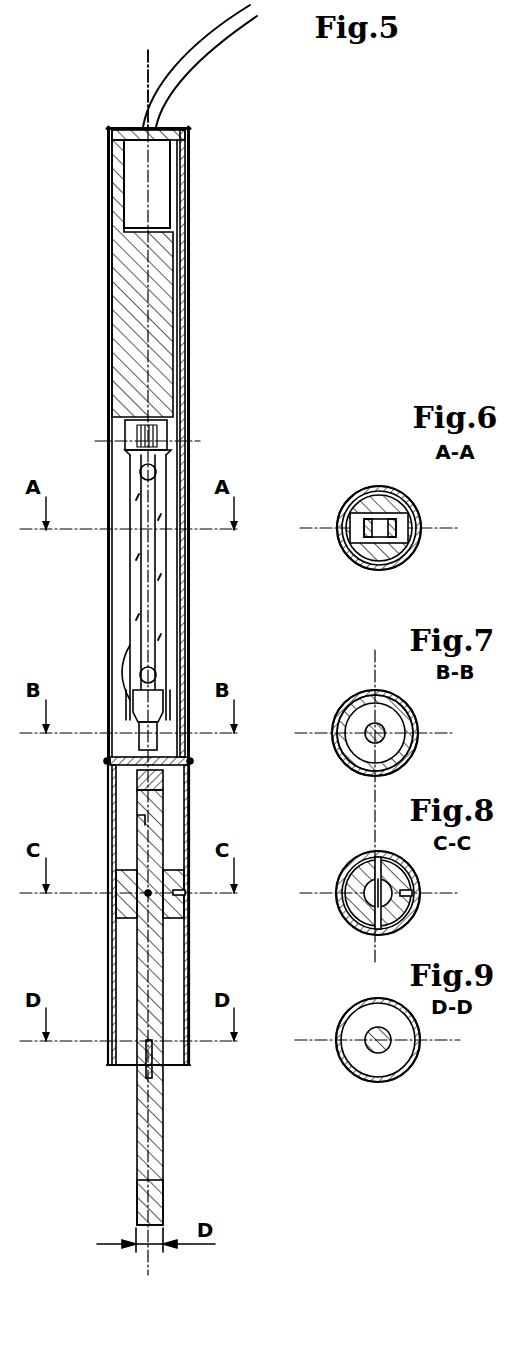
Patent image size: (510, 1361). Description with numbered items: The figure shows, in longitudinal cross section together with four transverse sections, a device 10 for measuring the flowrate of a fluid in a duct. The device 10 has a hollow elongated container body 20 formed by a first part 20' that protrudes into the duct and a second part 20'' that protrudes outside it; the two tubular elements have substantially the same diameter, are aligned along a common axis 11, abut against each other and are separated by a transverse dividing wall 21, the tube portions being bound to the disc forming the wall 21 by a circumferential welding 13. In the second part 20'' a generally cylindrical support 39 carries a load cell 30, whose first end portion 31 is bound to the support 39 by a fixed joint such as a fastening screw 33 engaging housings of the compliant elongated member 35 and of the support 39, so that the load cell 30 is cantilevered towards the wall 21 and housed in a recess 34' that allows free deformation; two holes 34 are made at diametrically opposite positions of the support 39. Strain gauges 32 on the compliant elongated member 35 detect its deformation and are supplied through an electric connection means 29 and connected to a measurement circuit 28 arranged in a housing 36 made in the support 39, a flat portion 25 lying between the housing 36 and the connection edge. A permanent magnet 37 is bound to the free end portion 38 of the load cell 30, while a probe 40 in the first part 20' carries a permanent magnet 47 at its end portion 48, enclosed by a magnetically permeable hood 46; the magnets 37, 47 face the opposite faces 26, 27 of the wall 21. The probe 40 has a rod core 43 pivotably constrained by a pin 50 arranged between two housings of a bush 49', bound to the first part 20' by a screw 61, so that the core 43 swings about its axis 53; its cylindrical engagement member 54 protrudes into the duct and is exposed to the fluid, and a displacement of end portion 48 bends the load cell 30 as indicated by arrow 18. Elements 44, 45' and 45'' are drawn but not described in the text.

In FIG. 5, the device 10 is at (272, 192).
In FIG. 5, the common axis 11 is at (148, 67).
In FIG. 5, the circumferential welding 13 is at (195, 762).
In FIG. 5, the arrow 18 is at (140, 735).
In FIG. 5, the hollow elongated container body 20 is at (236, 301).
In FIG. 5, the first part of hollow elongated container body 20' is at (183, 927).
In FIG. 8, the first part of hollow elongated container body 20' is at (363, 905).
In FIG. 9, the first part of hollow elongated container body 20' is at (363, 1057).
In FIG. 5, the second part of hollow elongated container body 20'' is at (117, 442).
In FIG. 6, the second part of hollow elongated container body 20'' is at (370, 550).
In FIG. 7, the second part of hollow elongated container body 20'' is at (361, 753).
In FIG. 5, the transverse dividing wall 21 is at (105, 757).
In FIG. 5, the flat portion 25 is at (176, 285).
In FIG. 5, the face of separation wall 26 is at (192, 757).
In FIG. 5, the face of separation wall 27 is at (165, 775).
In FIG. 5, the measurement circuit 28 is at (160, 180).
In FIG. 5, the electric connection means 29 is at (190, 47).
In FIG. 5, the load cell 30 is at (138, 545).
In FIG. 6, the load cell 30 is at (405, 523).
In FIG. 5, the first end portion of load cell 31 is at (165, 425).
In FIG. 5, the strain gauges 32 is at (158, 470).
In FIG. 5, the fastening screw 33 is at (165, 440).
In FIG. 6, the holes 34 is at (417, 514).
In FIG. 5, the recess 34' is at (80, 667).
In FIG. 5, the compliant elongated member 35 is at (154, 590).
In FIG. 6, the compliant elongated member 35 is at (392, 535).
In FIG. 5, the housing 36 is at (110, 175).
In FIG. 5, the permanent magnet 37 is at (130, 700).
In FIG. 7, the permanent magnet 37 is at (370, 720).
In FIG. 5, the free end portion of load cell 38 is at (162, 700).
In FIG. 5, the support 39 is at (128, 127).
In FIG. 6, the support 39 is at (415, 555).
In FIG. 7, the support 39 is at (410, 750).
In FIG. 5, the probe 40 is at (98, 1098).
In FIG. 5, the rod core 43 is at (158, 940).
In FIG. 8, the rod core 43 is at (345, 898).
In FIG. 9, the rod core 43 is at (385, 1050).
In FIG. 5, the shoulder 44 is at (160, 1075).
In FIG. 5, the end piece 45' is at (91, 1059).
In FIG. 5, the bushing 45'' is at (88, 1004).
In FIG. 5, the hood 46 is at (138, 820).
In FIG. 5, the permanent magnet 47 is at (138, 782).
In FIG. 5, the end portion of probe 48 is at (140, 830).
In FIG. 5, the bush 49' is at (120, 913).
In FIG. 8, the bush 49' is at (359, 883).
In FIG. 5, the pin 50 is at (148, 893).
In FIG. 8, the pin 50 is at (353, 860).
In FIG. 8, the axis 53 is at (375, 940).
In FIG. 5, the engagement member 54 is at (165, 1175).
In FIG. 5, the screw 61 is at (182, 893).
In FIG. 8, the screw 61 is at (420, 893).